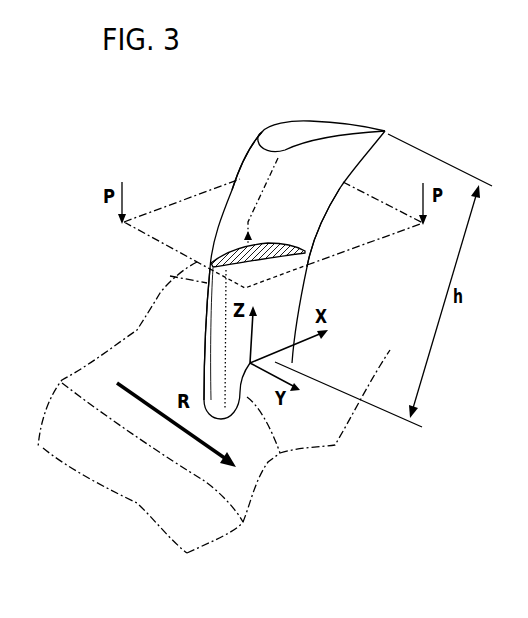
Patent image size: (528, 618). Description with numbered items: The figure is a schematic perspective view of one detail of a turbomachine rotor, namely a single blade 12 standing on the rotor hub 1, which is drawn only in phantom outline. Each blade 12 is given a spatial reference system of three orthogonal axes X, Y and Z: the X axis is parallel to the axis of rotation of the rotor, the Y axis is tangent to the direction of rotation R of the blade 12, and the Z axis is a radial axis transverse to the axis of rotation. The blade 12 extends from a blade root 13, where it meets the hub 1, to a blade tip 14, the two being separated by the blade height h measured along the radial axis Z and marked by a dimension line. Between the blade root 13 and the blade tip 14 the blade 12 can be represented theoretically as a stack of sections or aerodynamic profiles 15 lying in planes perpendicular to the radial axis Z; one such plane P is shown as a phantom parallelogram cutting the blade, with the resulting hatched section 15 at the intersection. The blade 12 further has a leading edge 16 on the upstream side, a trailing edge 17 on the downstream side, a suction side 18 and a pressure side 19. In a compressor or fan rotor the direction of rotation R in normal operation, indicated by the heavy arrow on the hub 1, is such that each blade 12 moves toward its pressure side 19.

The hub 1 is at (158, 407).
The blade 12 is at (159, 160).
The blade root 13 is at (280, 453).
The blade tip 14 is at (308, 131).
The aerodynamic profile 15 is at (245, 222).
The leading edge 16 is at (203, 350).
The trailing edge 17 is at (300, 293).
The suction side 18 is at (240, 167).
The pressure side 19 is at (310, 205).